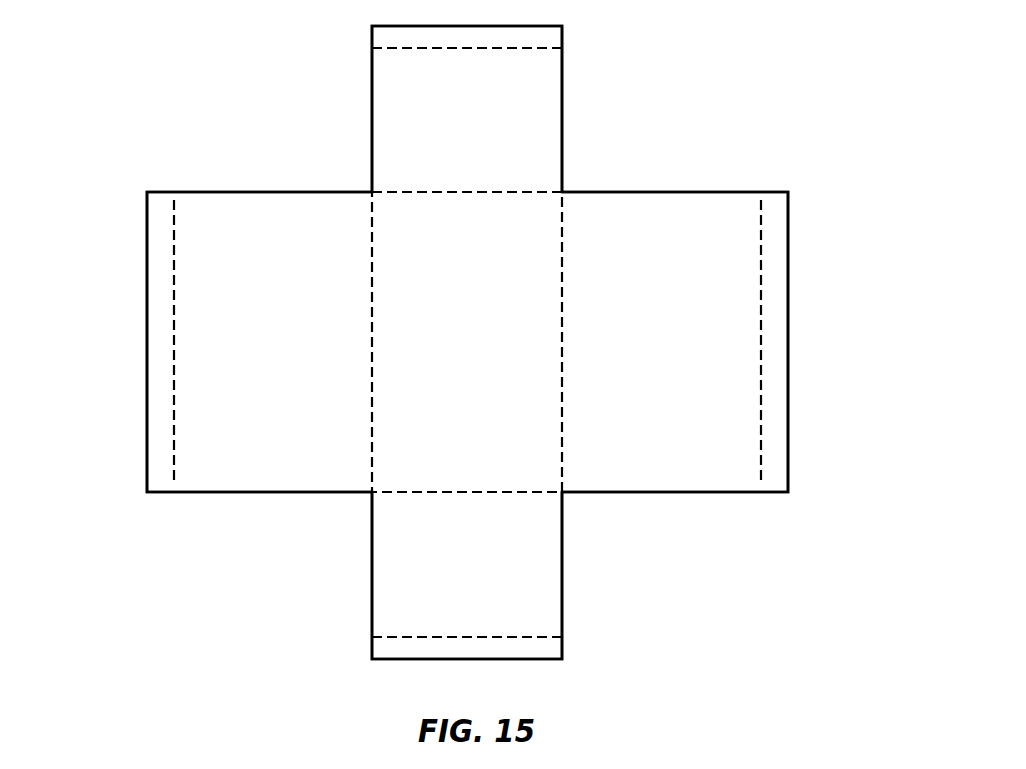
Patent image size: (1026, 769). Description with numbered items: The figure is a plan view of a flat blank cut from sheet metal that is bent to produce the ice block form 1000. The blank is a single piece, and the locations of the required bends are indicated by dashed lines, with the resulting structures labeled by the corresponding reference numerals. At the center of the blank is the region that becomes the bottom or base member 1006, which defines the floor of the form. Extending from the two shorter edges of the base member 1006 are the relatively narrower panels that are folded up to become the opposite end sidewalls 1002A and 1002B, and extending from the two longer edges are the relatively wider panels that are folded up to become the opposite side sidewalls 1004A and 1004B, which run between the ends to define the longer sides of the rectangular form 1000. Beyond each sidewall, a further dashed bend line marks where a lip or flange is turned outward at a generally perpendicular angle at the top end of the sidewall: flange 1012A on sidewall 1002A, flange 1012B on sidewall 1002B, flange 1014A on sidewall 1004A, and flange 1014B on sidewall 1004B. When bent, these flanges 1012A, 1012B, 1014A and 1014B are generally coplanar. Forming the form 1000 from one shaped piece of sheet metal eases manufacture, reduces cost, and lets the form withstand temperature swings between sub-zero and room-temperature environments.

The ice block form 1000 is at (137, 130).
The base member 1006 is at (420, 247).
The first end sidewall 1002A is at (532, 88).
The second end sidewall 1002B is at (409, 565).
The first side sidewall 1004A is at (698, 447).
The second side sidewall 1004B is at (278, 453).
The flange of first end sidewall 1012A is at (540, 36).
The flange of second end sidewall 1012B is at (548, 646).
The flange of first side sidewall 1014A is at (777, 213).
The flange of second side sidewall 1014B is at (163, 467).